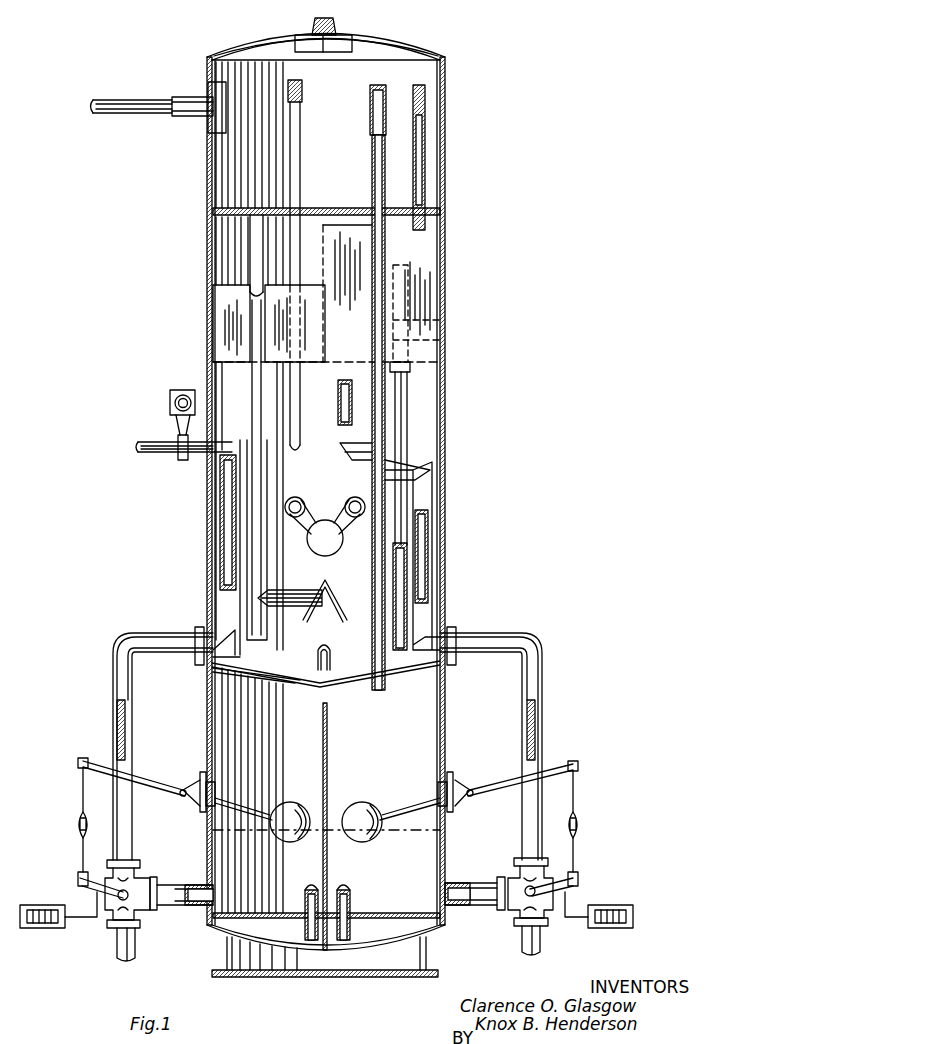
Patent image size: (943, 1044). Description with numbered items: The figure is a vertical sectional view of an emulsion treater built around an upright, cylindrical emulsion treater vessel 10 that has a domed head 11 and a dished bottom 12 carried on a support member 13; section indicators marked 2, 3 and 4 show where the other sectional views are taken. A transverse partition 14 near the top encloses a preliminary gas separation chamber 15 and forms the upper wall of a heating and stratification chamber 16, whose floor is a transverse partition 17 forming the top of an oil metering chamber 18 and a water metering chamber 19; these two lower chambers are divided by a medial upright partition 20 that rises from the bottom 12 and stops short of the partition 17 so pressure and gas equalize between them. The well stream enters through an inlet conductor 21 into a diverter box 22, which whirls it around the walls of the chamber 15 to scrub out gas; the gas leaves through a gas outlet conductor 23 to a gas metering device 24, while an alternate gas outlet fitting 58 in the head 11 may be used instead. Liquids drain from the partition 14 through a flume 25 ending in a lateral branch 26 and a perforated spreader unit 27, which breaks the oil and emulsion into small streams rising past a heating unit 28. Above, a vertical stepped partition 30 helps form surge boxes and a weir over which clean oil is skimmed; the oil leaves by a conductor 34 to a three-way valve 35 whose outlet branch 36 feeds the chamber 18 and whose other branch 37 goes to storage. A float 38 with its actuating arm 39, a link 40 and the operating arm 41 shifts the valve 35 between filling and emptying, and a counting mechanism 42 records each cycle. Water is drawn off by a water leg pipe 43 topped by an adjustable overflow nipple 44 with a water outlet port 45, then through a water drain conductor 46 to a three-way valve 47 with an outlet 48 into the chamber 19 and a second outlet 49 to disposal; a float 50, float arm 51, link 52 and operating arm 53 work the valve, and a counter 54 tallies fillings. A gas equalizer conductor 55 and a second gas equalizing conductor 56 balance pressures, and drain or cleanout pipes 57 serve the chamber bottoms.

The emulsion treater vessel 10 is at (443, 450).
The domed head 11 is at (405, 40).
The dished bottom 12 is at (228, 942).
The support member 13 is at (258, 975).
The transverse partition 14 is at (340, 208).
The preliminary gas separation chamber 15 is at (437, 137).
The heating and stratification chamber 16 is at (437, 390).
The transverse partition 17 is at (342, 688).
The oil metering chamber 18 is at (208, 744).
The water metering chamber 19 is at (440, 744).
The medial upright partition 20 is at (328, 758).
The well stream inlet conductor 21 is at (143, 114).
The diverter box 22 is at (210, 126).
The gas outlet conductor 23 is at (310, 258).
The gas metering device 24 is at (176, 460).
The flume 25 is at (262, 482).
The lateral branch 26 is at (275, 590).
The perforated spreader unit 27 is at (333, 605).
The heating unit 28 is at (340, 535).
The vertical stepped partition 30 is at (440, 258).
The conductor 34 is at (222, 602).
The three-way valve 35 is at (140, 883).
The outlet branch 36 is at (165, 903).
The branch 37 is at (118, 941).
The float 38 is at (300, 805).
The actuating arm 39 is at (143, 782).
The link 40 is at (75, 826).
The operating arm 41 is at (97, 877).
The counting mechanism 42 is at (42, 910).
The water leg pipe 43 is at (408, 432).
The adjustable overflow nipple 44 is at (440, 330).
The water outlet port 45 is at (415, 305).
The water drain conductor 46 is at (360, 465).
The three-way valve 47 is at (515, 878).
The outlet 48 is at (484, 905).
The second outlet 49 is at (541, 940).
The float 50 is at (365, 805).
The float arm 51 is at (552, 770).
The link 52 is at (581, 826).
The operating arm 53 is at (560, 878).
The counter 54 is at (626, 905).
The gas equalizer conductor 55 is at (372, 634).
The second gas equalizing conductor 56 is at (426, 160).
The drain or cleanout pipes 57 is at (318, 654).
The alternate gas outlet fitting 58 is at (332, 20).
The section line 2- 2 is at (325, 983).
The section line 3- 3 is at (205, 218).
The section line 4- 4 is at (200, 695).